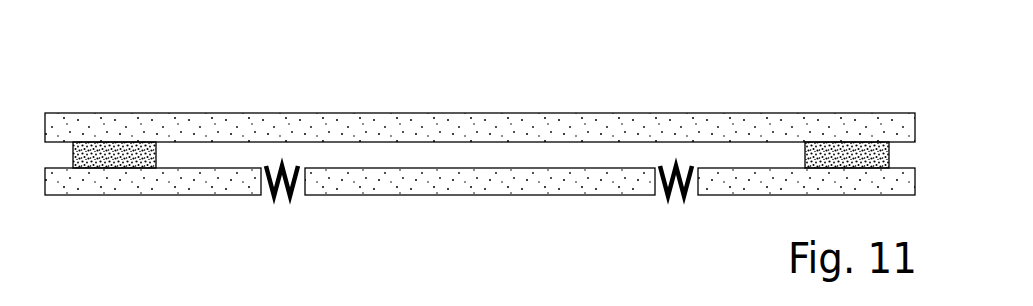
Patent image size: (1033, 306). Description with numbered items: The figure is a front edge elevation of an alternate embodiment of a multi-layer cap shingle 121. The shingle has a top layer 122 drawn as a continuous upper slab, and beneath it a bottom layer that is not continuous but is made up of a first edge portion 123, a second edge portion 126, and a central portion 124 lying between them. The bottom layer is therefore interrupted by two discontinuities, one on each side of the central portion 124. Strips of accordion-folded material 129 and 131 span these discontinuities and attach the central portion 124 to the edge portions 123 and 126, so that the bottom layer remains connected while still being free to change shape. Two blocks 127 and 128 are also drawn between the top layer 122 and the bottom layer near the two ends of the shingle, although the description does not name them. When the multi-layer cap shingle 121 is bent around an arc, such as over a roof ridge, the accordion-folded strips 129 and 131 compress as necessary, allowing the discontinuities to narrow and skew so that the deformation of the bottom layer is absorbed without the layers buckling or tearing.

The multi-layer cap shingle 121 is at (829, 87).
The top layer 122 is at (687, 123).
The first edge portion 123 is at (768, 173).
The central portion 124 is at (535, 190).
The second edge portion 126 is at (200, 174).
The spacer 127 is at (877, 148).
The spacer 128 is at (113, 145).
The strip of accordion-folded material 129 is at (675, 196).
The strip of accordion-folded material 131 is at (282, 196).